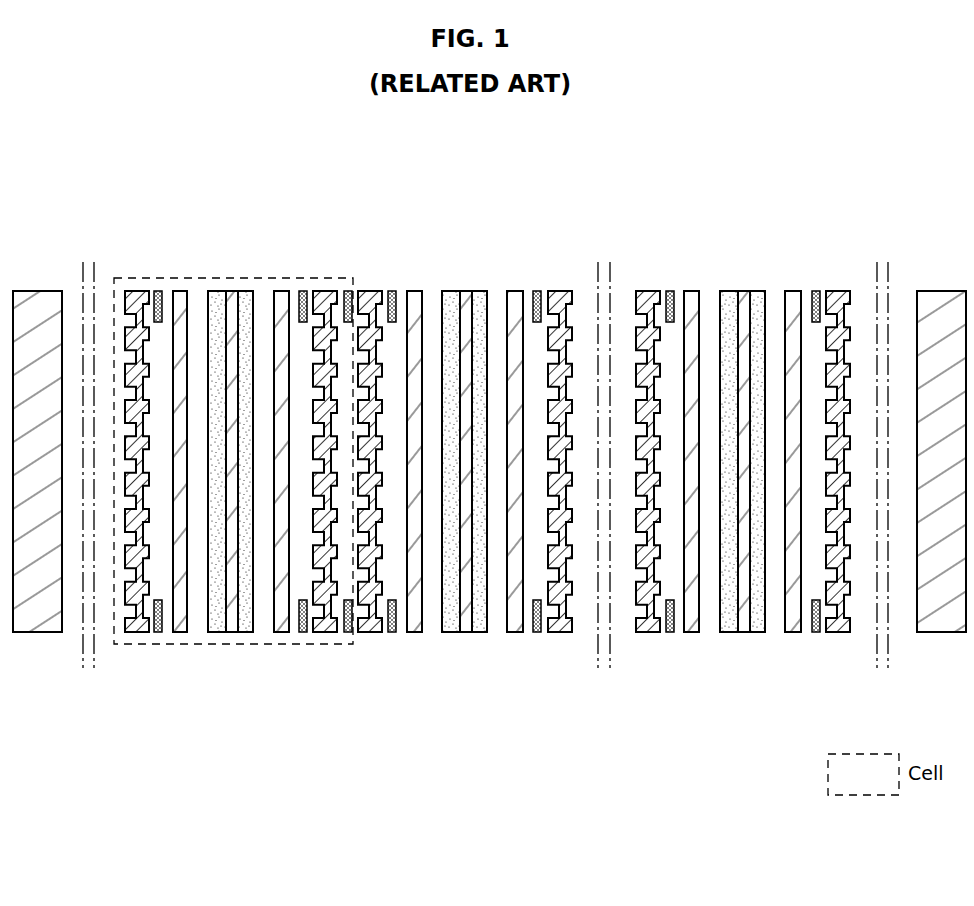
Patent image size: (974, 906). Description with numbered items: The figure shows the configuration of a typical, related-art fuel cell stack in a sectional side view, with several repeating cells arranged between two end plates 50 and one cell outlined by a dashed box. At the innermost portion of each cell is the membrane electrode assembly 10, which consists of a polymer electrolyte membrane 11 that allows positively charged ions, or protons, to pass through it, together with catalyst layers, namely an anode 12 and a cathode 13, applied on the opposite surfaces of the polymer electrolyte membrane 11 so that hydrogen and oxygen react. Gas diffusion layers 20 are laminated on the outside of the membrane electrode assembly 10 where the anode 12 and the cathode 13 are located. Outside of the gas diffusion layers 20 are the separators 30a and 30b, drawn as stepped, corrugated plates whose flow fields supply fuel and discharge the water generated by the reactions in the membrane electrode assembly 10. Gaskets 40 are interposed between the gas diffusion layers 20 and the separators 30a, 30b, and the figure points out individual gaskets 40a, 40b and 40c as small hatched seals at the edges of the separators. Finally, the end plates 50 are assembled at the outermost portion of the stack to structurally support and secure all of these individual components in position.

The membrane electrode assembly 10 is at (468, 535).
The polymer electrolyte membrane 11 is at (232, 632).
The anode 12 is at (245, 632).
The cathode 13 is at (218, 632).
The gas diffusion layer 20 is at (182, 632).
The separator 30a is at (135, 633).
The separator 30b is at (328, 632).
The gasket 40 is at (158, 278).
The gasket 40a is at (303, 290).
The gasket 40b is at (348, 290).
The gasket 40c is at (393, 290).
The end plate 50 is at (40, 622).